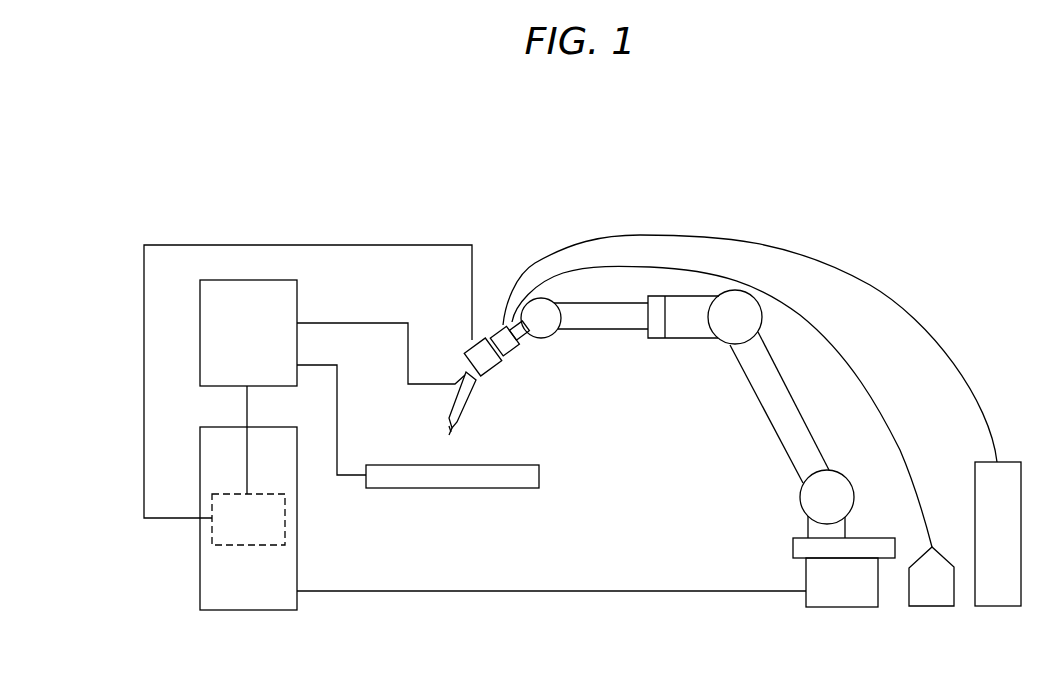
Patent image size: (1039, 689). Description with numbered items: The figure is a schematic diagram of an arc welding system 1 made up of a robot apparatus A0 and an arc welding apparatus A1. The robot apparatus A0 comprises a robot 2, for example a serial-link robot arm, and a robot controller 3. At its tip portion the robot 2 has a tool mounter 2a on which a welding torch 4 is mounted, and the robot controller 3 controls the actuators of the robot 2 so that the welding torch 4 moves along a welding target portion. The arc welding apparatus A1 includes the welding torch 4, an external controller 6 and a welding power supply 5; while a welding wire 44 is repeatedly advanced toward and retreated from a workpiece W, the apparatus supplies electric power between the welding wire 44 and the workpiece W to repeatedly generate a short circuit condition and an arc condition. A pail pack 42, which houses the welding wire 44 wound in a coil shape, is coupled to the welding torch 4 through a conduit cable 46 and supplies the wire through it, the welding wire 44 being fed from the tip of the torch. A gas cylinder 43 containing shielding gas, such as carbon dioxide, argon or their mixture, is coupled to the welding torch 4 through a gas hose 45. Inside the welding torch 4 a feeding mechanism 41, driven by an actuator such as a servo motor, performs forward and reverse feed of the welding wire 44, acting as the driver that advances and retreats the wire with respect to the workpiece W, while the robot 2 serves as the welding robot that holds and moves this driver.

The arc welding system 1 is at (560, 206).
The robot apparatus A0 is at (682, 210).
The arc welding apparatus A1 is at (338, 226).
The robot 2 is at (735, 434).
The tool mounter 2a is at (532, 336).
The robot controller 3 is at (251, 612).
The welding torch 4 is at (495, 393).
The feeding mechanism 41 is at (462, 350).
The welding wire 44 is at (452, 428).
The gas hose 45 is at (893, 306).
The conduit cable 46 is at (798, 314).
The pail pack 42 is at (931, 608).
The gas cylinder 43 is at (998, 608).
The welding power supply 5 is at (297, 296).
The external controller 6 is at (285, 518).
The workpiece W is at (465, 490).